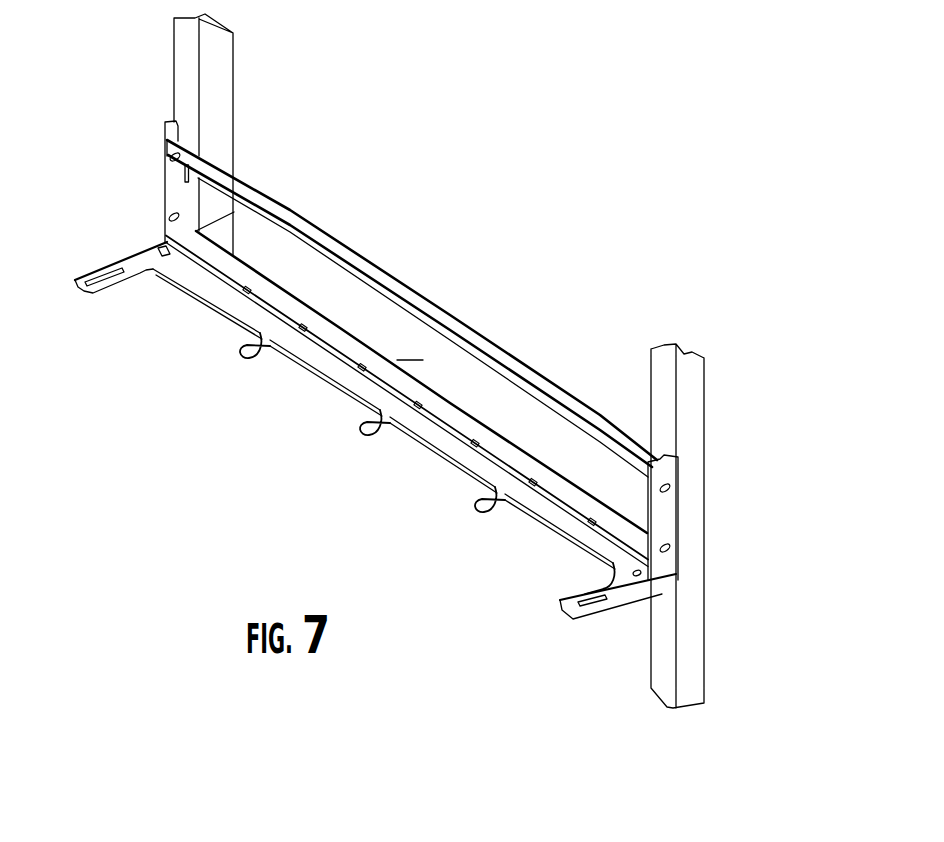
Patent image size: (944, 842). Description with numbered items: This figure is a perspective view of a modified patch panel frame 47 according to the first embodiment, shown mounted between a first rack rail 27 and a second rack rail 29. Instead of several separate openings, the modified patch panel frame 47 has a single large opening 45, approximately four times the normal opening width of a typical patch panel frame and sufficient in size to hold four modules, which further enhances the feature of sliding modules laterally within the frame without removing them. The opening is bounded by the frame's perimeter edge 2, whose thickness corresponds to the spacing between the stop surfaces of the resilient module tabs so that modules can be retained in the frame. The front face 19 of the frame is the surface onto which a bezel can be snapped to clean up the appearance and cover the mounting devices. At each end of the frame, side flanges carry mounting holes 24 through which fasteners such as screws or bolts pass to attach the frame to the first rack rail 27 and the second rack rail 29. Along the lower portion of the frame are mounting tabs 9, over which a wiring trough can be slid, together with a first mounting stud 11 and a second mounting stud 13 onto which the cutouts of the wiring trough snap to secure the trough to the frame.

The perimeter edge 2 is at (412, 336).
The mounting tabs 9 is at (144, 262).
The first mounting stud 11 is at (660, 577).
The second mounting stud 13 is at (160, 246).
The front face 19 is at (451, 412).
The mounting holes 24 is at (176, 214).
The first rack rail 27 is at (227, 63).
The second rack rail 29 is at (658, 375).
The single large opening 45 is at (415, 374).
The modified patch panel frame 47 is at (370, 223).